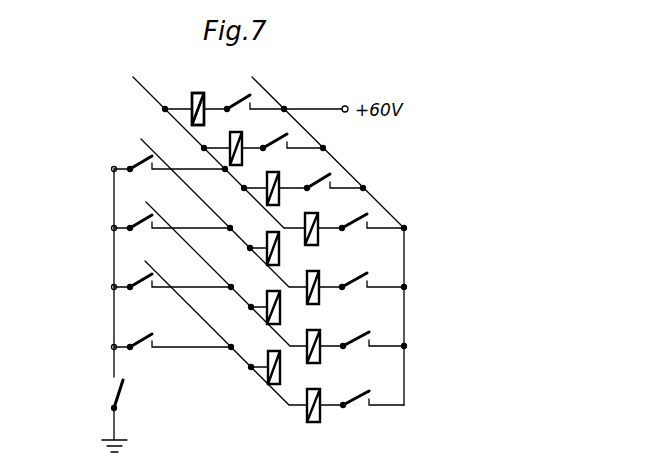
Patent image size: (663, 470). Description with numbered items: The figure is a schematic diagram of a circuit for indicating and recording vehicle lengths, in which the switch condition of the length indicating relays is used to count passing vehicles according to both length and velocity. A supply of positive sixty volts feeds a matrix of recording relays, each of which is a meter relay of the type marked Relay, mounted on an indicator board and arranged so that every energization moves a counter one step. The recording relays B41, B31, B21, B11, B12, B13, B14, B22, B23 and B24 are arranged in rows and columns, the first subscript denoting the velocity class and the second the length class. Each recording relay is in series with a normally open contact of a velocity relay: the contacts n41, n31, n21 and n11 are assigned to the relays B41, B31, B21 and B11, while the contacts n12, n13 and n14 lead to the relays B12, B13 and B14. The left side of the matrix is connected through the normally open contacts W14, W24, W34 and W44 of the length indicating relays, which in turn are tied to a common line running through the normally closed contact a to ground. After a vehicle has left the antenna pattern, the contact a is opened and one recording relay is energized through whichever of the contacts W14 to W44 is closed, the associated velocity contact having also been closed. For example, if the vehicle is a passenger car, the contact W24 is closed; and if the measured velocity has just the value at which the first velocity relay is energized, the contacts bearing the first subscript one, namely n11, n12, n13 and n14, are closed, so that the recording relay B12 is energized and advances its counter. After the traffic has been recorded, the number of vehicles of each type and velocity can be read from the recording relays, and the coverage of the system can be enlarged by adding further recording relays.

The recording relay Relay is at (197, 93).
The recording relay B41 is at (197, 102).
The recording relay B31 is at (236, 142).
The recording relay B21 is at (275, 182).
The recording relay B11 is at (325, 224).
The recording relay B12 is at (327, 281).
The recording relay B13 is at (328, 338).
The recording relay B14 is at (327, 397).
The recording relay B22 is at (277, 248).
The recording relay B23 is at (278, 307).
The recording relay B24 is at (278, 366).
The normally open contact n41 is at (256, 90).
The normally open contact n31 is at (293, 131).
The normally open contact n21 is at (335, 170).
The normally open contact n11 is at (373, 233).
The normally open contact n12 is at (373, 291).
The normally open contact n13 is at (374, 351).
The normally open contact n14 is at (373, 409).
The normally open contact W14 is at (171, 174).
The normally open contact W24 is at (173, 234).
The normally open contact W34 is at (174, 293).
The normally open contact W44 is at (174, 353).
The normally closed contact a is at (126, 395).